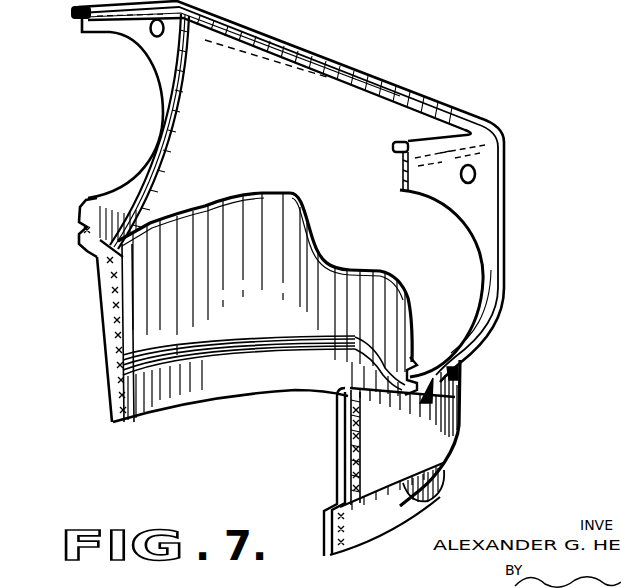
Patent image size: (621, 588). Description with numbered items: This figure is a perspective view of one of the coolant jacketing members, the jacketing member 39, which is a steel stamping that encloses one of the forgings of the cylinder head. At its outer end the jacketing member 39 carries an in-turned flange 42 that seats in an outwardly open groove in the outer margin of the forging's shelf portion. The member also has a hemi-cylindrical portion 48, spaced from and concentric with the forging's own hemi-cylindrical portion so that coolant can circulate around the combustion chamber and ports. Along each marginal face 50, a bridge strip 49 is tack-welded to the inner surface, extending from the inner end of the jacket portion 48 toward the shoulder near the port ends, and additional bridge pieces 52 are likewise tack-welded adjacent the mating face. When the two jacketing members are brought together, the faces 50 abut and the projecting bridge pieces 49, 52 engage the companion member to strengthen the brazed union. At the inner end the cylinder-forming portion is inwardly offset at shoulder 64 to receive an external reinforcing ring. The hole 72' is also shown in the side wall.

The in-turned flange 42 is at (398, 90).
The bridge pieces 52 is at (75, 13).
The hole in side wall 72' is at (522, 150).
The coolant jacketing member 39 is at (512, 185).
The bridge strip 49 is at (110, 340).
The marginal face 50 is at (350, 457).
The hemi-cylindrical portion 48 is at (420, 431).
The shoulder 64 is at (430, 501).